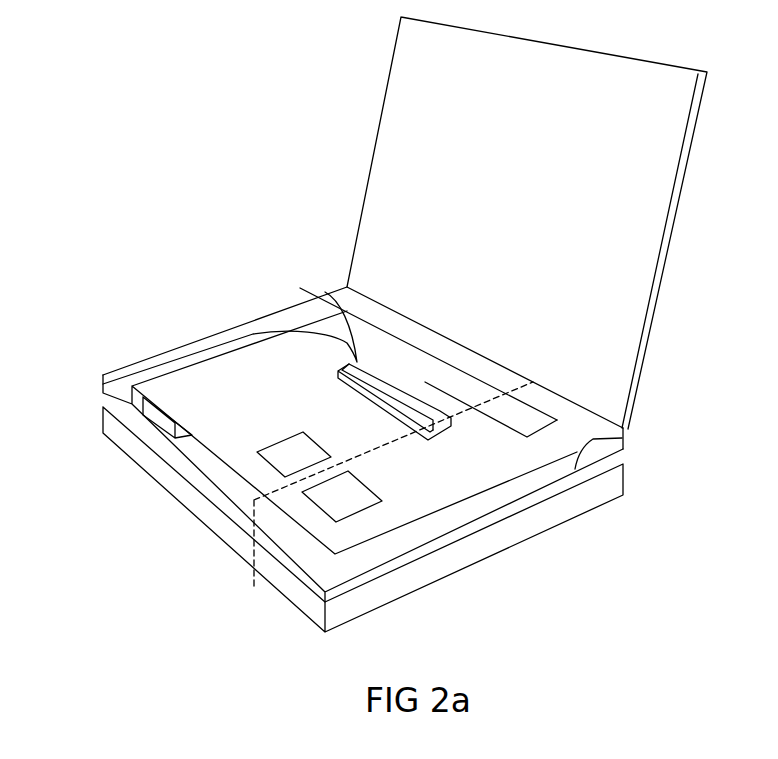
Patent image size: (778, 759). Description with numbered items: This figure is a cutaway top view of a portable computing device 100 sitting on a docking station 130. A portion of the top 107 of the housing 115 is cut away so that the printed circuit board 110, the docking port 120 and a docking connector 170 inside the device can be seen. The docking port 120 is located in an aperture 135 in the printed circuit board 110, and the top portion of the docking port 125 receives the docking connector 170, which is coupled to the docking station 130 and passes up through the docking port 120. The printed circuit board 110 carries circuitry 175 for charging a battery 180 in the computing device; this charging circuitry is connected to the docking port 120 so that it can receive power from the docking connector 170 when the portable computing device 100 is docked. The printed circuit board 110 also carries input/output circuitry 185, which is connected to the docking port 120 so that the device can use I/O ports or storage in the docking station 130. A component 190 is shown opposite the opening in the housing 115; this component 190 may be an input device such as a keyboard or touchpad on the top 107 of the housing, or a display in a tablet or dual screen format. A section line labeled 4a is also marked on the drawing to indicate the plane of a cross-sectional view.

The portable computing device 100 is at (264, 314).
The top of the housing 107 is at (347, 290).
The printed circuit board 110 is at (242, 353).
The housing 115 is at (627, 439).
The docking port 120 is at (443, 434).
The top portion of the docking port 125 is at (342, 372).
The docking station 130 is at (215, 522).
The aperture 135 is at (352, 395).
The docking connector 170 is at (347, 312).
The circuitry 175 is at (353, 513).
The battery 180 is at (160, 421).
The input/output circuitry 185 is at (327, 458).
The component 190 is at (488, 398).
The section line 4a is at (381, 493).